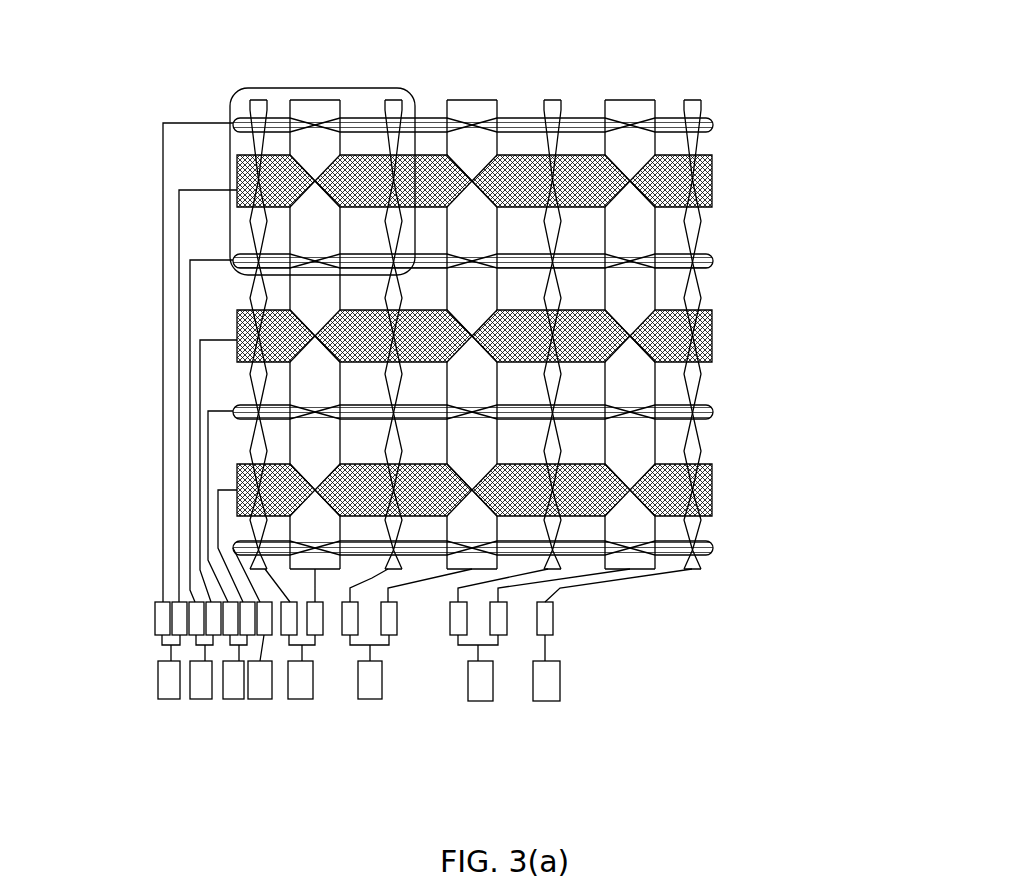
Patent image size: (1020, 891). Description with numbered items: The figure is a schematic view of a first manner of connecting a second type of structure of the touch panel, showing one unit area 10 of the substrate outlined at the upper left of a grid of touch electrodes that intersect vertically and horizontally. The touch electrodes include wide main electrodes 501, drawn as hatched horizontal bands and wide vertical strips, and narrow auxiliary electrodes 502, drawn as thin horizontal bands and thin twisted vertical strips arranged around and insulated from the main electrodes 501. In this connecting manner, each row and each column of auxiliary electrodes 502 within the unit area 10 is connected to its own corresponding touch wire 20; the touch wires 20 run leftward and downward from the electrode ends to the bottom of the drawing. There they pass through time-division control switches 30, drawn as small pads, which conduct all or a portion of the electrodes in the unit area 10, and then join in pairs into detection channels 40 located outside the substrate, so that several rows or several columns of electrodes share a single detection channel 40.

The unit area 10 is at (318, 88).
The touch wire 20 is at (178, 280).
The time-division control switch 30 is at (163, 632).
The detection channel 40 is at (562, 685).
The main electrode 501 is at (625, 100).
The auxiliary electrode 502 is at (692, 100).